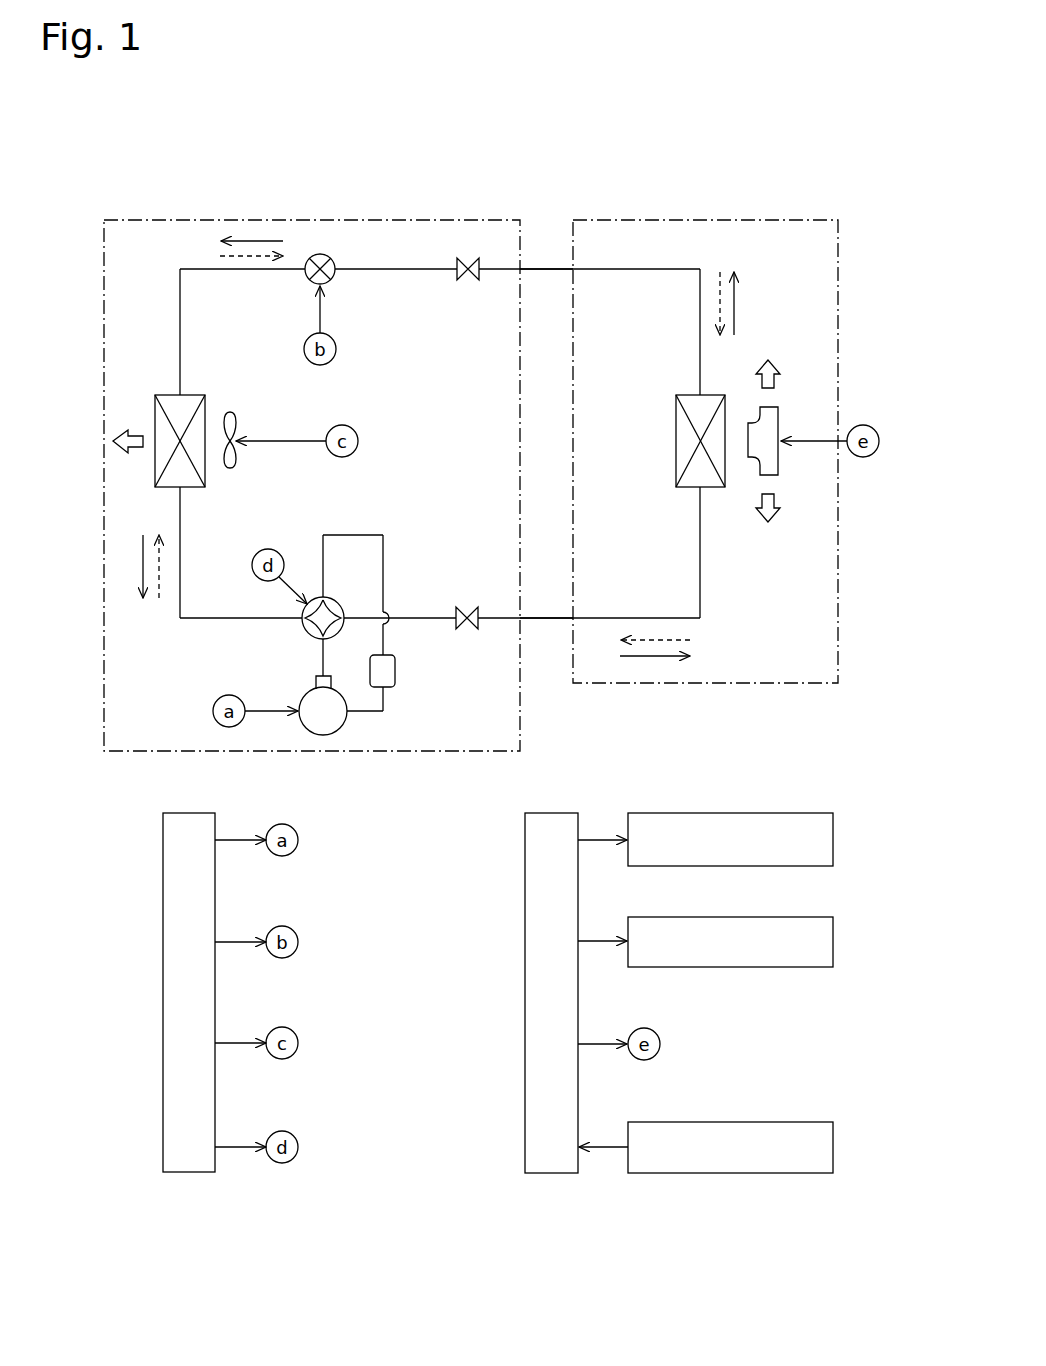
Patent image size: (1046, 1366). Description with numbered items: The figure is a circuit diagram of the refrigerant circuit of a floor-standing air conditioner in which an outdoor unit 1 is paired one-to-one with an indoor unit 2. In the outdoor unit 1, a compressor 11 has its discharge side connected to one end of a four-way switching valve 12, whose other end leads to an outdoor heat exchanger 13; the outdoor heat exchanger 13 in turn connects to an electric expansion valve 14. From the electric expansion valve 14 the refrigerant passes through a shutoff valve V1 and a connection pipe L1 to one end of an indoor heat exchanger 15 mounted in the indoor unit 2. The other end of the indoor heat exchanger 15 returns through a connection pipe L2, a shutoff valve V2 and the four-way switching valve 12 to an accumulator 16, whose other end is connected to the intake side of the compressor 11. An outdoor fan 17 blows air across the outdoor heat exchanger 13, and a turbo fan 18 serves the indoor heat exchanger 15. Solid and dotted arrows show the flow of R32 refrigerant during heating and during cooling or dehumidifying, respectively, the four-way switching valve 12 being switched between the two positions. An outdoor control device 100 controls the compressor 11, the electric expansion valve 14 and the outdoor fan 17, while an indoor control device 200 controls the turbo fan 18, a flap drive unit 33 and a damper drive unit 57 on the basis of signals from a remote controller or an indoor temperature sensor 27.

The outdoor unit 1 is at (312, 435).
The indoor unit 2 is at (705, 401).
The compressor 11 is at (307, 690).
The four-way switching valve 12 is at (308, 632).
The outdoor heat exchanger 13 is at (190, 396).
The electric expansion valve 14 is at (333, 282).
The indoor heat exchanger 15 is at (712, 396).
The accumulator 16 is at (395, 670).
The outdoor fan 17 is at (240, 422).
The turbo fan 18 is at (780, 423).
The shutoff valve V1 is at (467, 281).
The shutoff valve V2 is at (466, 606).
The connection pipe L1 is at (551, 266).
The connection pipe L2 is at (546, 621).
The outdoor control device 100 is at (163, 850).
The indoor control device 200 is at (525, 850).
The flap drive unit 33 is at (707, 813).
The damper drive unit 57 is at (700, 967).
The indoor temperature sensor 27 is at (697, 1122).